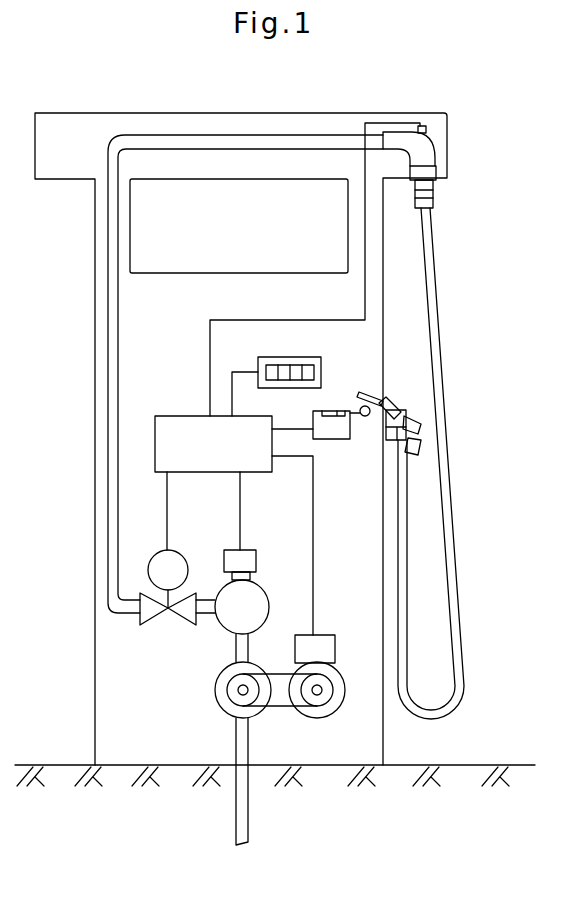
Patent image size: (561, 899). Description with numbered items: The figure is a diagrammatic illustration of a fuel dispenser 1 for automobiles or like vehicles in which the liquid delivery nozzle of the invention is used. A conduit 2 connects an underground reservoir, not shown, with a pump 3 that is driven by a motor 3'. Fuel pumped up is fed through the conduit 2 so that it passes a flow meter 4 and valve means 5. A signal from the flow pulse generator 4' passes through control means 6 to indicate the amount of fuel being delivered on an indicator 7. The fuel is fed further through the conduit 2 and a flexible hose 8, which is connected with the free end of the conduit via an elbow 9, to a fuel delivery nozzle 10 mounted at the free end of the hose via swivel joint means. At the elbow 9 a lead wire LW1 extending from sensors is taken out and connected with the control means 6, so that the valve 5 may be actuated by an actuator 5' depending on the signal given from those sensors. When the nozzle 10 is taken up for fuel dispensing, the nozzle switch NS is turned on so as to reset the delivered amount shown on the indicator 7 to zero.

The fuel dispenser 1 is at (92, 378).
The conduit 2 is at (284, 141).
The pump 3 is at (249, 694).
The motor 3' is at (330, 688).
The flow meter 4 is at (255, 603).
The flow pulse generator 4' is at (256, 545).
The valve means 5 is at (168, 624).
The actuator 5' is at (176, 563).
The control means 6 is at (177, 425).
The indicator 7 is at (292, 374).
The flexible hose 8 is at (441, 385).
The elbow 9 is at (430, 150).
The fuel delivery nozzle 10 is at (393, 404).
The lead wire LW1 is at (397, 122).
The nozzle switch NS is at (337, 439).